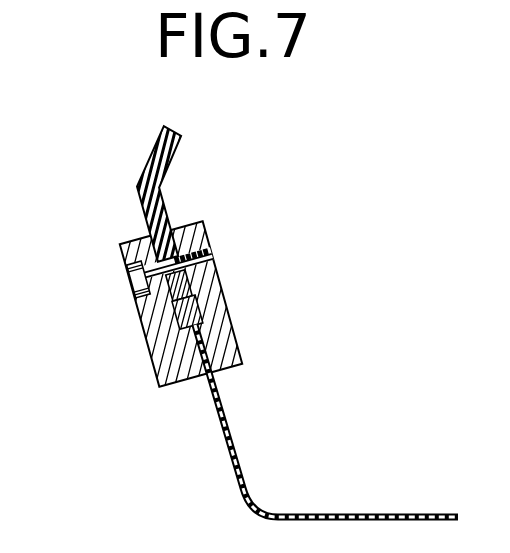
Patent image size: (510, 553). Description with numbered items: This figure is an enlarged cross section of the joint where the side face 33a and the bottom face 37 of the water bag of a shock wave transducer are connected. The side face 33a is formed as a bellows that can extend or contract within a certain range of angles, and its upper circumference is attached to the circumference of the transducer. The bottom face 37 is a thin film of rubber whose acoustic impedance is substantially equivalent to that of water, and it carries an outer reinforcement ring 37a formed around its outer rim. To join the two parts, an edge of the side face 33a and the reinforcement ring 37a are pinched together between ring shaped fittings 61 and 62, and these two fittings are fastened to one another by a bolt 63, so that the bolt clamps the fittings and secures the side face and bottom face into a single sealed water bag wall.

The side face 33a is at (150, 160).
The bolt 63 is at (128, 287).
The outer reinforcement ring 37a is at (220, 292).
The ring shaped fitting 61 is at (236, 358).
The ring shaped fitting 62 is at (158, 381).
The bottom face 37 is at (220, 428).